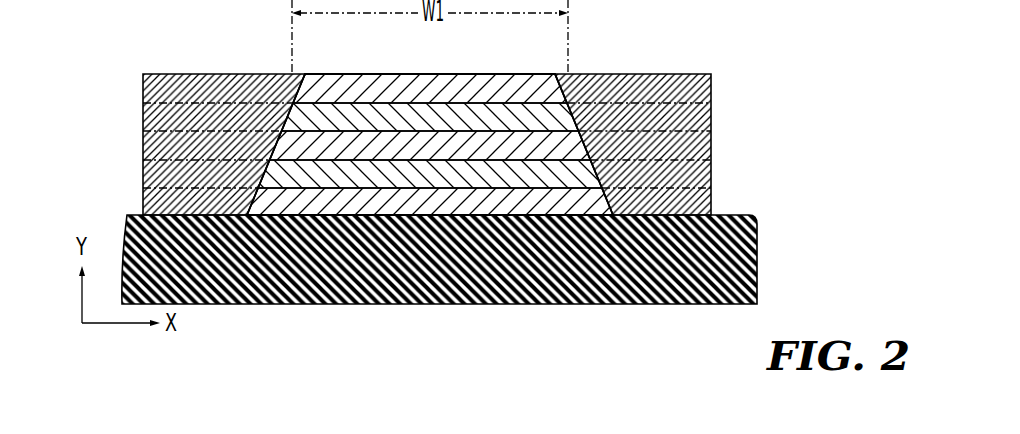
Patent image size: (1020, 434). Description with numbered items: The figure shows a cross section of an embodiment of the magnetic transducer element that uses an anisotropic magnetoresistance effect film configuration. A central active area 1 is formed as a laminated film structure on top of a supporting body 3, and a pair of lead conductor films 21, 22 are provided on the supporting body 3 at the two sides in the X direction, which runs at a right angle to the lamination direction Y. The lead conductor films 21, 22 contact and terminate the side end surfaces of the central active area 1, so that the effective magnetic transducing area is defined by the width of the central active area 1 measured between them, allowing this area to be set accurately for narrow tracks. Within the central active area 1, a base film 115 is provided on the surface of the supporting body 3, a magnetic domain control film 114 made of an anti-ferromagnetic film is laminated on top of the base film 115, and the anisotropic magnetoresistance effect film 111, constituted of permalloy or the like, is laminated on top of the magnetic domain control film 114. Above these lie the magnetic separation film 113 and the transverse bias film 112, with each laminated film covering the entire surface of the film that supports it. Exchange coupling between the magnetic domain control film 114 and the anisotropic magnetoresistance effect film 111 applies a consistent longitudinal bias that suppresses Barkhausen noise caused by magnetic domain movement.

The central active area 1 is at (440, 121).
The supporting body 3 is at (758, 262).
The lead conductor film 21 is at (214, 74).
The lead conductor film 22 is at (646, 75).
The anisotropic magnetoresistance effect film 111 is at (711, 131).
The transverse bias film 112 is at (711, 74).
The magnetic separation film 113 is at (143, 131).
The magnetic domain control film 114 is at (143, 188).
The base film 115 is at (711, 188).